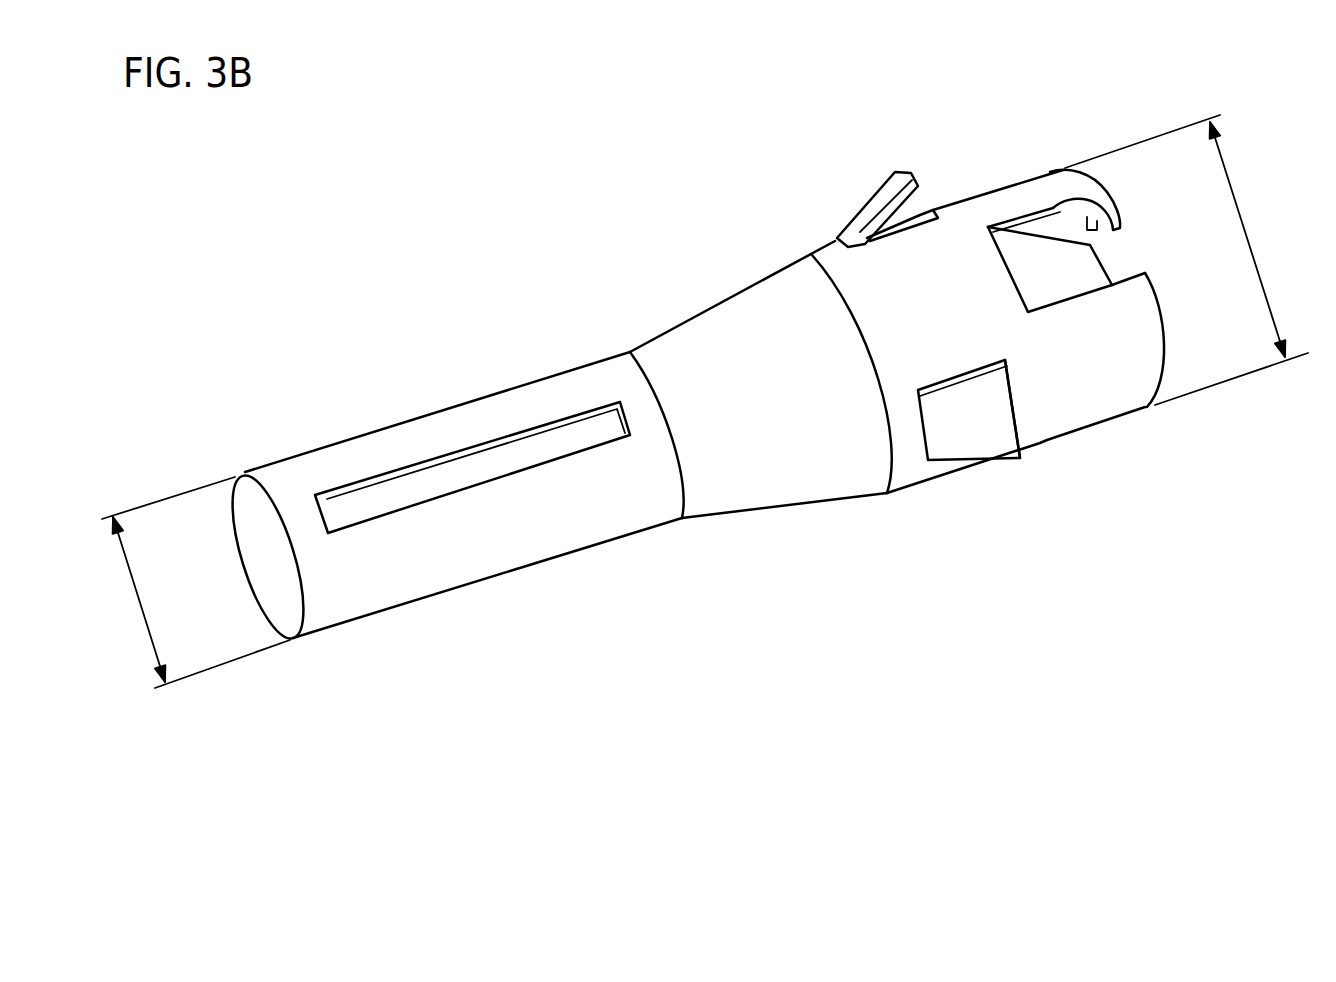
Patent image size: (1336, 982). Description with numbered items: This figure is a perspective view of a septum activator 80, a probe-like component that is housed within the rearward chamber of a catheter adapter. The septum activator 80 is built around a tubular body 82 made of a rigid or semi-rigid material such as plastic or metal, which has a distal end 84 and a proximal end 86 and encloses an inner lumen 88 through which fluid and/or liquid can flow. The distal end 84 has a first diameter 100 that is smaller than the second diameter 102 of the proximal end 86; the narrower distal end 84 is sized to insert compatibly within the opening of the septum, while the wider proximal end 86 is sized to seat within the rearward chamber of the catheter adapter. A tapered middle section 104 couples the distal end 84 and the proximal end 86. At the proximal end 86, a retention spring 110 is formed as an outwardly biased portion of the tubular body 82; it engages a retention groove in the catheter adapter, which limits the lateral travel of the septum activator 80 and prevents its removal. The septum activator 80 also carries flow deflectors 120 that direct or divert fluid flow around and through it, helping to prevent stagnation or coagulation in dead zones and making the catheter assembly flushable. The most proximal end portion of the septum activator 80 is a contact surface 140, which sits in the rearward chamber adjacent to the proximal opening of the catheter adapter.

The septum activator 80 is at (493, 294).
The tubular body 82 is at (967, 217).
The distal end 84 is at (295, 670).
The proximal end 86 is at (1142, 477).
The inner lumen 88 is at (280, 578).
The first diameter 100 is at (138, 600).
The second diameter 102 is at (1242, 213).
The tapered middle section 104 is at (752, 320).
The retention spring 110 is at (1007, 365).
The flow deflector 120 is at (880, 200).
The contact surface 140 is at (1145, 342).